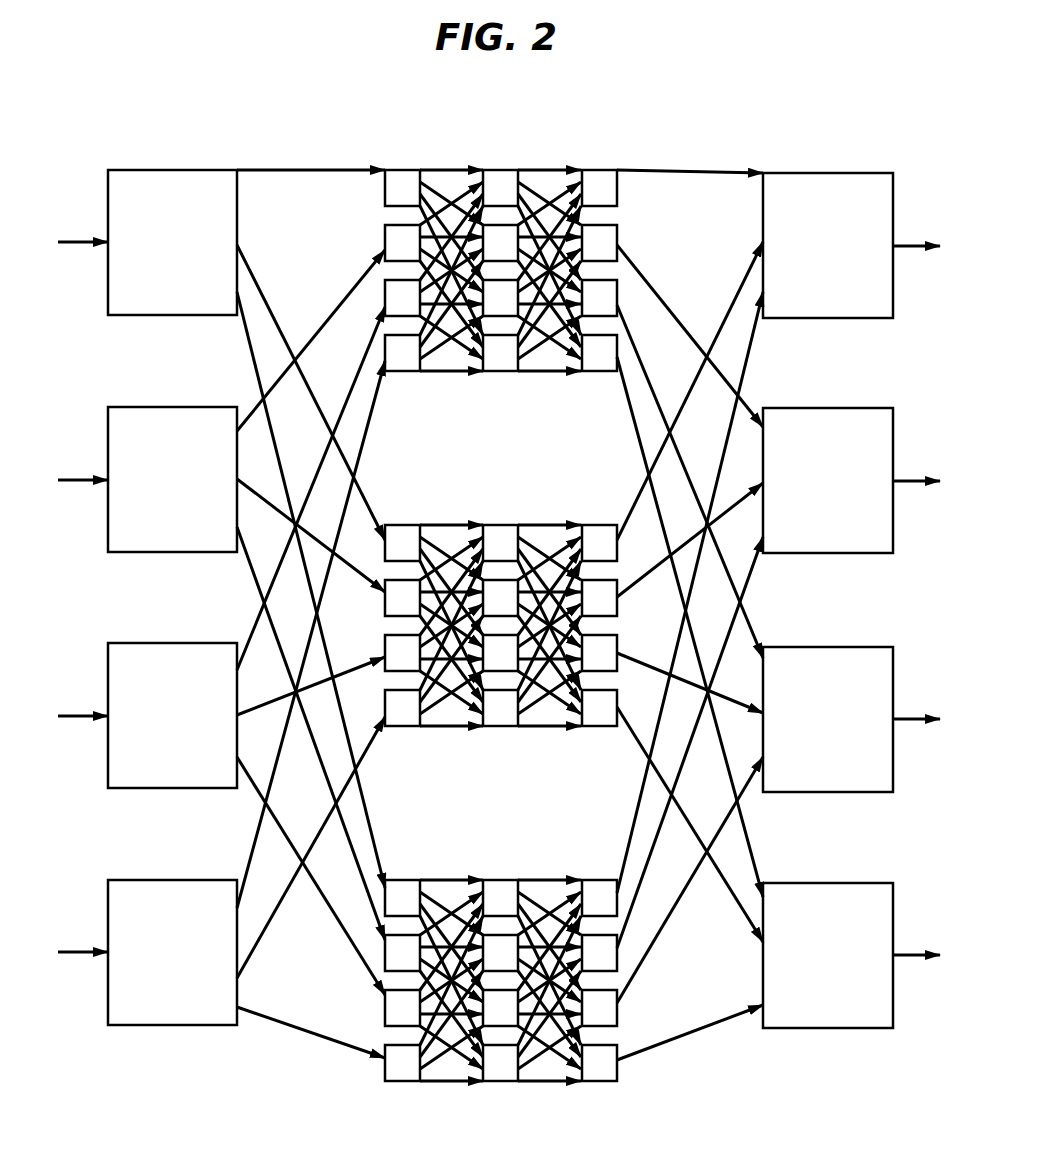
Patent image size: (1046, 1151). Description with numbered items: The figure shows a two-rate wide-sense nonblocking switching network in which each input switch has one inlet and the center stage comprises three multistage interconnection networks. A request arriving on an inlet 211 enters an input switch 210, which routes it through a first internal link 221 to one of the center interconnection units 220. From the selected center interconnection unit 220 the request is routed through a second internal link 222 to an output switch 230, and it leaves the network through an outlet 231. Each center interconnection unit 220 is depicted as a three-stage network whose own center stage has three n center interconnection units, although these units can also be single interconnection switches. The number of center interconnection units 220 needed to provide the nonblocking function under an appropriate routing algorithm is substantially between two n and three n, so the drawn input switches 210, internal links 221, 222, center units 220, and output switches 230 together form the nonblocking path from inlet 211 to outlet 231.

The input switch 210 is at (165, 170).
The inlet 211 is at (77, 240).
The center interconnection units 220 is at (617, 138).
The first internal link 221 is at (293, 170).
The second internal link 222 is at (673, 172).
The output switch 230 is at (835, 173).
The outlet 231 is at (907, 243).